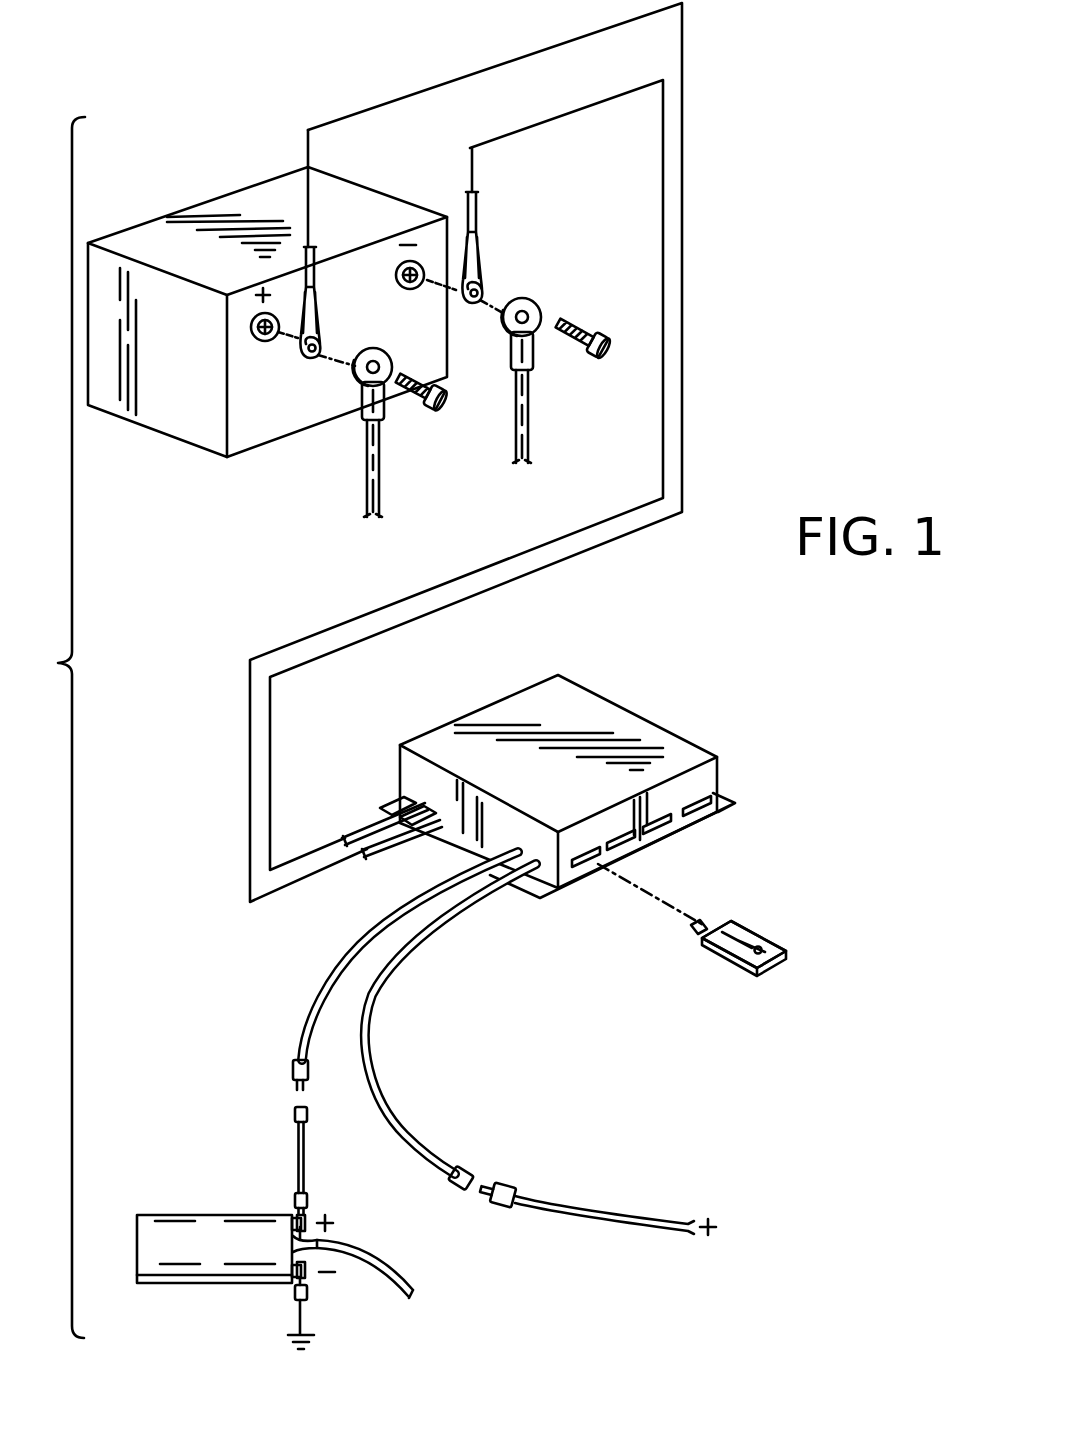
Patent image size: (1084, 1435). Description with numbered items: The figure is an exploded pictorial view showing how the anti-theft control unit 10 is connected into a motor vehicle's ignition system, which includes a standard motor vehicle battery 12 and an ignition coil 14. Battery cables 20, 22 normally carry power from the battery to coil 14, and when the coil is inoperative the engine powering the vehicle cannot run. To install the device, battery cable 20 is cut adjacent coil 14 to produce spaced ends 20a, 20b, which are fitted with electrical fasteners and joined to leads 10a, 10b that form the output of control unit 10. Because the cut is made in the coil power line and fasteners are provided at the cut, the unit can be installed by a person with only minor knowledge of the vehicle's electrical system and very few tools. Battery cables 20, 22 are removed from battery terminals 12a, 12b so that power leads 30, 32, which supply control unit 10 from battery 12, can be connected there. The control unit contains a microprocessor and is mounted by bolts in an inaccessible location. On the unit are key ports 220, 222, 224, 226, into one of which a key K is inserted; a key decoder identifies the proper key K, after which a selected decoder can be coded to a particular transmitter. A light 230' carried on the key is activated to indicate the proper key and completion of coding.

The anti-theft control unit 10 is at (655, 715).
The output lead 10a is at (362, 942).
The output lead 10b is at (385, 975).
The motor vehicle battery 12 is at (218, 200).
The battery terminal 12a is at (272, 333).
The battery terminal 12b is at (399, 288).
The ignition coil 14 is at (165, 1220).
The battery cable 20 is at (378, 478).
The spaced end 20a is at (294, 1110).
The spaced end 20b is at (507, 1183).
The battery cable 22 is at (525, 413).
The power lead 30 is at (400, 602).
The power lead 32 is at (503, 587).
The key port 220 is at (575, 867).
The key port 222 is at (625, 845).
The key port 224 is at (665, 828).
The key port 226 is at (717, 812).
The key K is at (763, 927).
The light 230' is at (745, 920).